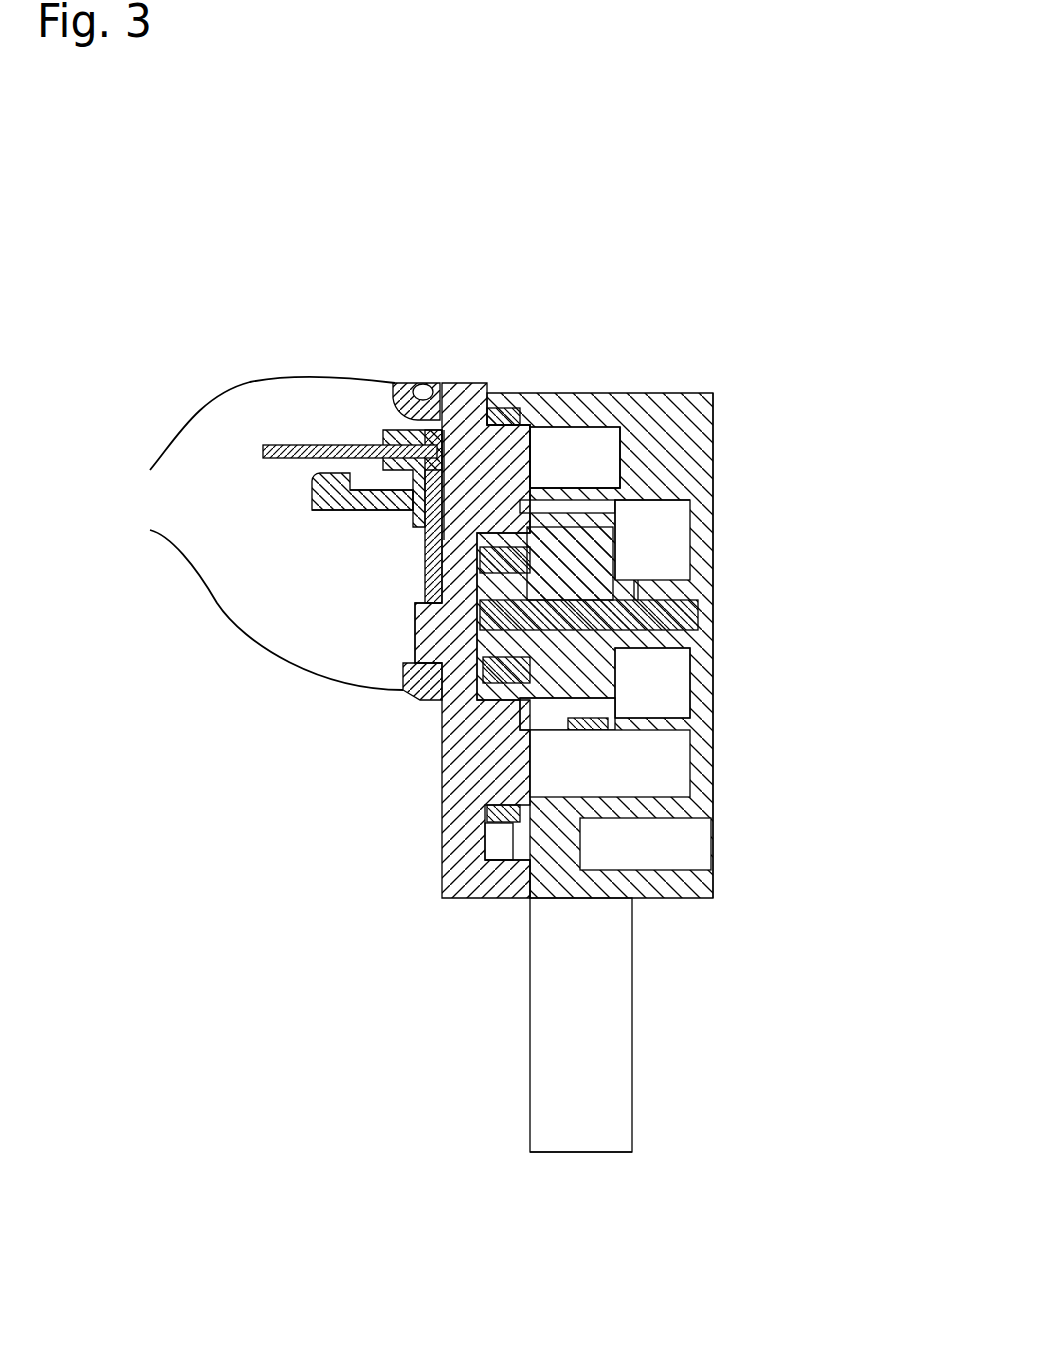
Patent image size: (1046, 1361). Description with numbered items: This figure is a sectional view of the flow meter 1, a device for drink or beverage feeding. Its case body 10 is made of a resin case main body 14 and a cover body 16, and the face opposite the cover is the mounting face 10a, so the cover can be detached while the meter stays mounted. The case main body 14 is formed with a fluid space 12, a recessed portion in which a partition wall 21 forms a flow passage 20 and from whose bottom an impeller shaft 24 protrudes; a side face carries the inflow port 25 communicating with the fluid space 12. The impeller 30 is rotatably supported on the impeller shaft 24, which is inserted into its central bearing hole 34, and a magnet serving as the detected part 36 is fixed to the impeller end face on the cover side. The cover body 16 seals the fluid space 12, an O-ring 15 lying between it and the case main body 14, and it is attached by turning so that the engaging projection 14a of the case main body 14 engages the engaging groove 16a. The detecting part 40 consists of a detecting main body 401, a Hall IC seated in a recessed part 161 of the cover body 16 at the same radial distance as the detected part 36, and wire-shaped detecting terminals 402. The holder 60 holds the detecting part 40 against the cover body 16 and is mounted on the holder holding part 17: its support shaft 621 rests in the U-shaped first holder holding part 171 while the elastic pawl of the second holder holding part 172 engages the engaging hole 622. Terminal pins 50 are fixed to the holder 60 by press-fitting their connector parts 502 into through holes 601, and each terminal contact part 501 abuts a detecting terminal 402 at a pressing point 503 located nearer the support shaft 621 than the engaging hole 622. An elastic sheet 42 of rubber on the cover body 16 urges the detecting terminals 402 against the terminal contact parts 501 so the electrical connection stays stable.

The flow meter 1 is at (248, 218).
The case body 10 is at (622, 212).
The mounting face 10a is at (710, 487).
The fluid space 12 is at (653, 690).
The case main body 14 is at (635, 557).
The engaging projection 14a is at (492, 845).
The O-ring 15 is at (535, 420).
The cover body 16 is at (408, 593).
The engaging groove 16a is at (497, 880).
The recessed part 161 is at (417, 610).
The holder holding part 17 is at (226, 533).
The first holder holding part 171 is at (246, 432).
The second holder holding part 172 is at (250, 599).
The flow passage 20 is at (645, 400).
The partition wall 21 is at (713, 453).
The impeller shaft 24 is at (710, 620).
The inflow port 25 is at (578, 1110).
The impeller 30 is at (625, 548).
The bearing hole 34 is at (713, 593).
The detected part 36 is at (482, 668).
The detecting part 40 is at (361, 518).
The detecting main body 401 is at (432, 572).
The detecting terminals 402 is at (440, 540).
The elastic sheet 42 is at (500, 408).
The terminal pins 50 is at (297, 513).
The terminal contact part 501 is at (408, 520).
The connector part 502 is at (318, 478).
The pressing point 503 is at (600, 442).
The holder 60 is at (352, 526).
The through holes 601 is at (380, 445).
The support shaft 621 is at (425, 383).
The engaging hole 622 is at (420, 668).